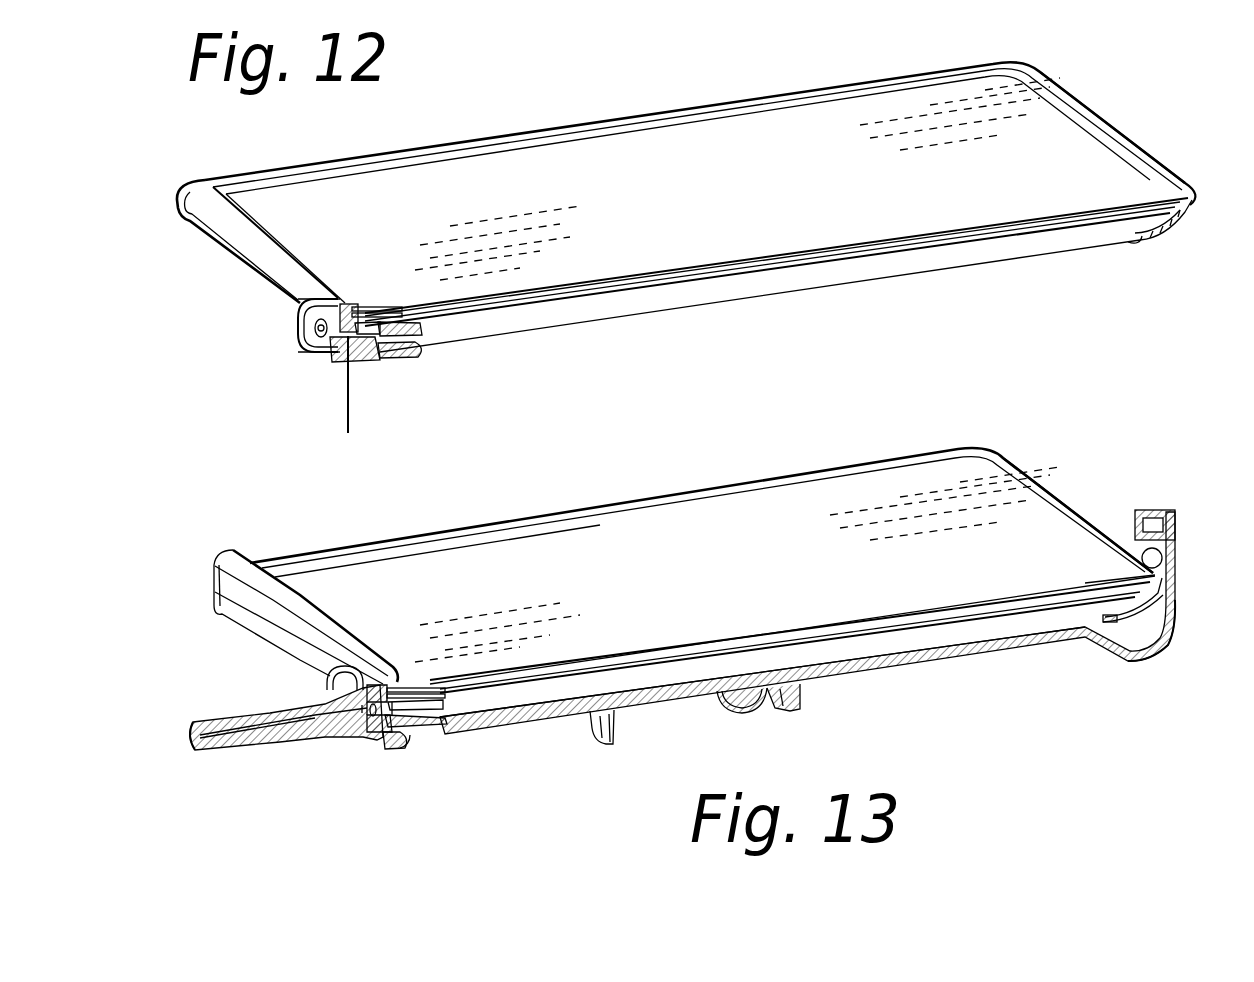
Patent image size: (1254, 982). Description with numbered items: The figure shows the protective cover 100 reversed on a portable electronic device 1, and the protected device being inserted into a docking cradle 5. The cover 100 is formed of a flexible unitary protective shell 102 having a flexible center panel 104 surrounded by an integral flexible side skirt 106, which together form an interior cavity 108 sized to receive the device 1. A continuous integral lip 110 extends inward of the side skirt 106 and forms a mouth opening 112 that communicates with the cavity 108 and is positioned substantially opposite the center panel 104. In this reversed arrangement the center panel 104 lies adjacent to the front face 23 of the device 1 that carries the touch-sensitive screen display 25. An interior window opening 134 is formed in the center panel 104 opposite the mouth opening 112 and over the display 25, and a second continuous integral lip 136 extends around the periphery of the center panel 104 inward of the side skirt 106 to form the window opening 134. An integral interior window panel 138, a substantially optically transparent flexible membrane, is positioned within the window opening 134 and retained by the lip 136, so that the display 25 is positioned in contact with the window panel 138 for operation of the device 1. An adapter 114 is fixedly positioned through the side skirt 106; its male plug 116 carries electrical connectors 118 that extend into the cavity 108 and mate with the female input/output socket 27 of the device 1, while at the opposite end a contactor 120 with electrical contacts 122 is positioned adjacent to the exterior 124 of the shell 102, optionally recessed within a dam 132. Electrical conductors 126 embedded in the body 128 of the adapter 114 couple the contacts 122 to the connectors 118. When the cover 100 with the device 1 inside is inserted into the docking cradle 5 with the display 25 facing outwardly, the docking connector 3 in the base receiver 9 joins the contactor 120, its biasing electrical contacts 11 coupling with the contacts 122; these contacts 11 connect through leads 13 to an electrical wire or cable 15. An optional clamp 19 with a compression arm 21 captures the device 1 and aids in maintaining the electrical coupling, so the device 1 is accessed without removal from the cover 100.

In FIG. 12, the portable electronic device 1 is at (860, 270).
In FIG. 13, the portable electronic device 1 is at (913, 637).
In FIG. 13, the docking connector 3 is at (330, 687).
In FIG. 13, the docking cradle 5 is at (983, 657).
In FIG. 13, the base receiver 9 is at (233, 560).
In FIG. 13, the biasing electrical contacts 11 is at (360, 725).
In FIG. 13, the leads 13 is at (235, 728).
In FIG. 13, the electrical wire or cable 15 is at (213, 750).
In FIG. 13, the clamp 19 is at (1157, 510).
In FIG. 13, the arm 21 is at (1172, 577).
In FIG. 12, the front face 23 is at (1143, 200).
In FIG. 13, the front face 23 is at (1100, 590).
In FIG. 12, the touch-sensitive screen display 25 is at (725, 270).
In FIG. 13, the touch-sensitive screen display 25 is at (833, 630).
In FIG. 12, the female input/output socket 27 is at (360, 326).
In FIG. 13, the female input/output socket 27 is at (440, 700).
In FIG. 12, the protective cover 100 is at (488, 136).
In FIG. 13, the protective cover 100 is at (460, 527).
In FIG. 12, the flexible unitary protective shell 102 is at (1063, 102).
In FIG. 13, the flexible unitary protective shell 102 is at (1037, 487).
In FIG. 12, the flexible center panel 104 is at (680, 117).
In FIG. 13, the flexible center panel 104 is at (713, 500).
In FIG. 12, the side skirt 106 is at (1177, 227).
In FIG. 13, the side skirt 106 is at (1145, 660).
In FIG. 12, the interior cavity 108 is at (950, 240).
In FIG. 13, the interior cavity 108 is at (940, 623).
In FIG. 12, the continuous integral lip 110 is at (1147, 247).
In FIG. 13, the continuous integral lip 110 is at (1112, 623).
In FIG. 12, the mouth opening 112 is at (1143, 243).
In FIG. 13, the mouth opening 112 is at (1107, 623).
In FIG. 12, the adapter 114 is at (333, 357).
In FIG. 13, the adapter 114 is at (383, 680).
In FIG. 12, the male plug 116 is at (415, 335).
In FIG. 13, the male plug 116 is at (447, 721).
In FIG. 12, the electrical connectors 118 is at (368, 312).
In FIG. 13, the electrical connectors 118 is at (393, 693).
In FIG. 12, the contactor 120 is at (305, 343).
In FIG. 13, the contactor 120 is at (373, 735).
In FIG. 12, the electrical contacts 122 is at (310, 350).
In FIG. 13, the electrical contacts 122 is at (405, 740).
In FIG. 12, the exterior 124 is at (237, 258).
In FIG. 12, the electrical conductors 126 is at (350, 403).
In FIG. 12, the body 128 is at (350, 345).
In FIG. 13, the body 128 is at (377, 735).
In FIG. 12, the dam 132 is at (300, 323).
In FIG. 13, the dam 132 is at (383, 748).
In FIG. 12, the interior window opening 134 is at (290, 247).
In FIG. 13, the interior window opening 134 is at (317, 557).
In FIG. 12, the continuous integral lip 136 is at (380, 306).
In FIG. 13, the continuous integral lip 136 is at (403, 688).
In FIG. 12, the integral interior window panel 138 is at (745, 203).
In FIG. 13, the integral interior window panel 138 is at (698, 591).